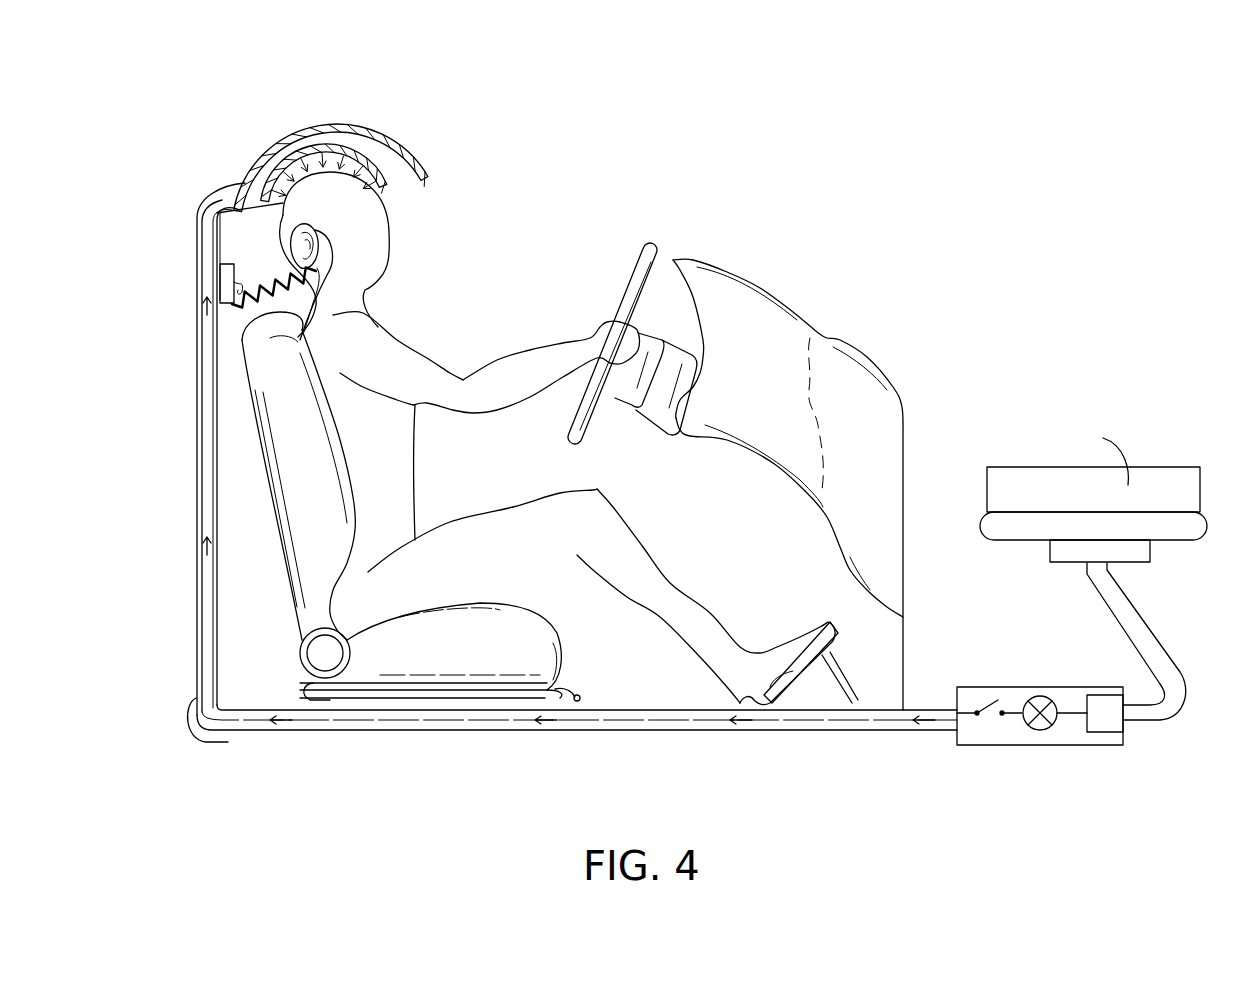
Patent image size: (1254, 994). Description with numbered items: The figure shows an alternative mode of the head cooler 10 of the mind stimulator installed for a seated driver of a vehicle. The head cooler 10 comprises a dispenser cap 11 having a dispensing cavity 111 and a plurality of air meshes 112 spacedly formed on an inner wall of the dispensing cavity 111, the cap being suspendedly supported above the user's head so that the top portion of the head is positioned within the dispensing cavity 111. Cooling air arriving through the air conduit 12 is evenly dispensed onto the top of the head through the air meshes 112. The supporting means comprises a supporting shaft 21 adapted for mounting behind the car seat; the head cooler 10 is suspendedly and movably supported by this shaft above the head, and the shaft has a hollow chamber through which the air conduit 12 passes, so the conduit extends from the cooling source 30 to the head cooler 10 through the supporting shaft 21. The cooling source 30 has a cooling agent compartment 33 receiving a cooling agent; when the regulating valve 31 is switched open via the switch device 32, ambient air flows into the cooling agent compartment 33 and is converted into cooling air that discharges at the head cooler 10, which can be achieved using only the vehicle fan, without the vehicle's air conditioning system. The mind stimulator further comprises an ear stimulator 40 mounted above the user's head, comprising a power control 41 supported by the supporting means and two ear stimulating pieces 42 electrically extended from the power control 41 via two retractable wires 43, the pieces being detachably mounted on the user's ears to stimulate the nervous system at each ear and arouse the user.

The head cooler 10 is at (208, 133).
The dispenser cap 11 is at (455, 114).
The dispensing cavity 111 is at (383, 190).
The air meshes 112 is at (305, 153).
The air conduit 12 is at (210, 496).
The supporting shaft 21 is at (200, 272).
The ear stimulator 40 is at (134, 350).
The power control 41 is at (223, 285).
The ear stimulating pieces 42 is at (350, 312).
The retractable wires 43 is at (243, 316).
The cooling source 30 is at (1088, 833).
The regulating valve 31 is at (1037, 722).
The switch device 32 is at (993, 703).
The cooling agent compartment 33 is at (1100, 712).